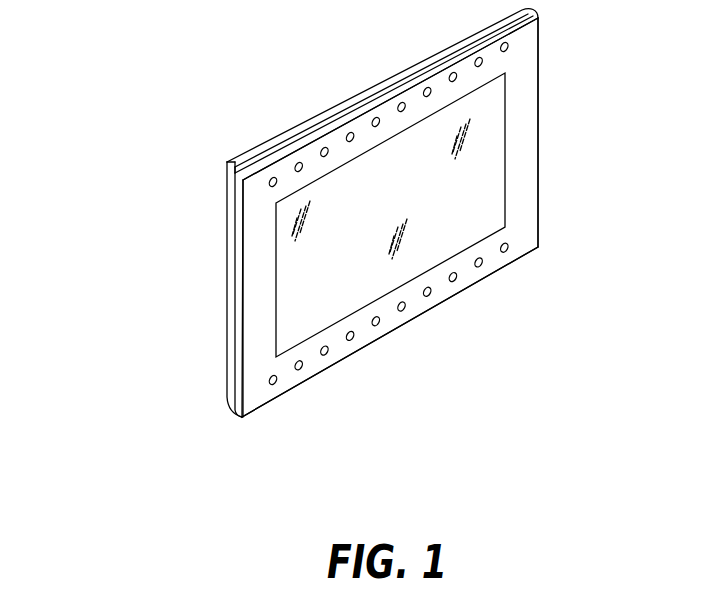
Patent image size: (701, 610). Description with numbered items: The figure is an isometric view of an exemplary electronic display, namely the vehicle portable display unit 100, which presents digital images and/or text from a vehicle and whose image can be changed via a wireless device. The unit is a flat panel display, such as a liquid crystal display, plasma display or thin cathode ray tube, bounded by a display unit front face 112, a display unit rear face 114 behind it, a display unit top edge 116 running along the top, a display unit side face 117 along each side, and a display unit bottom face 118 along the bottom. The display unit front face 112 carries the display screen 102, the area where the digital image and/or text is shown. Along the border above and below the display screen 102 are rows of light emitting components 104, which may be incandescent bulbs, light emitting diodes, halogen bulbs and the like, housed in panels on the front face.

The vehicle portable display unit 100 is at (131, 120).
The display screen 102 is at (447, 190).
The light emitting components 104 is at (507, 249).
The display unit front face 112 is at (520, 220).
The display unit rear face 114 is at (293, 124).
The display unit top edge 116 is at (373, 100).
The display unit side face 117 is at (540, 138).
The display unit bottom face 118 is at (403, 312).